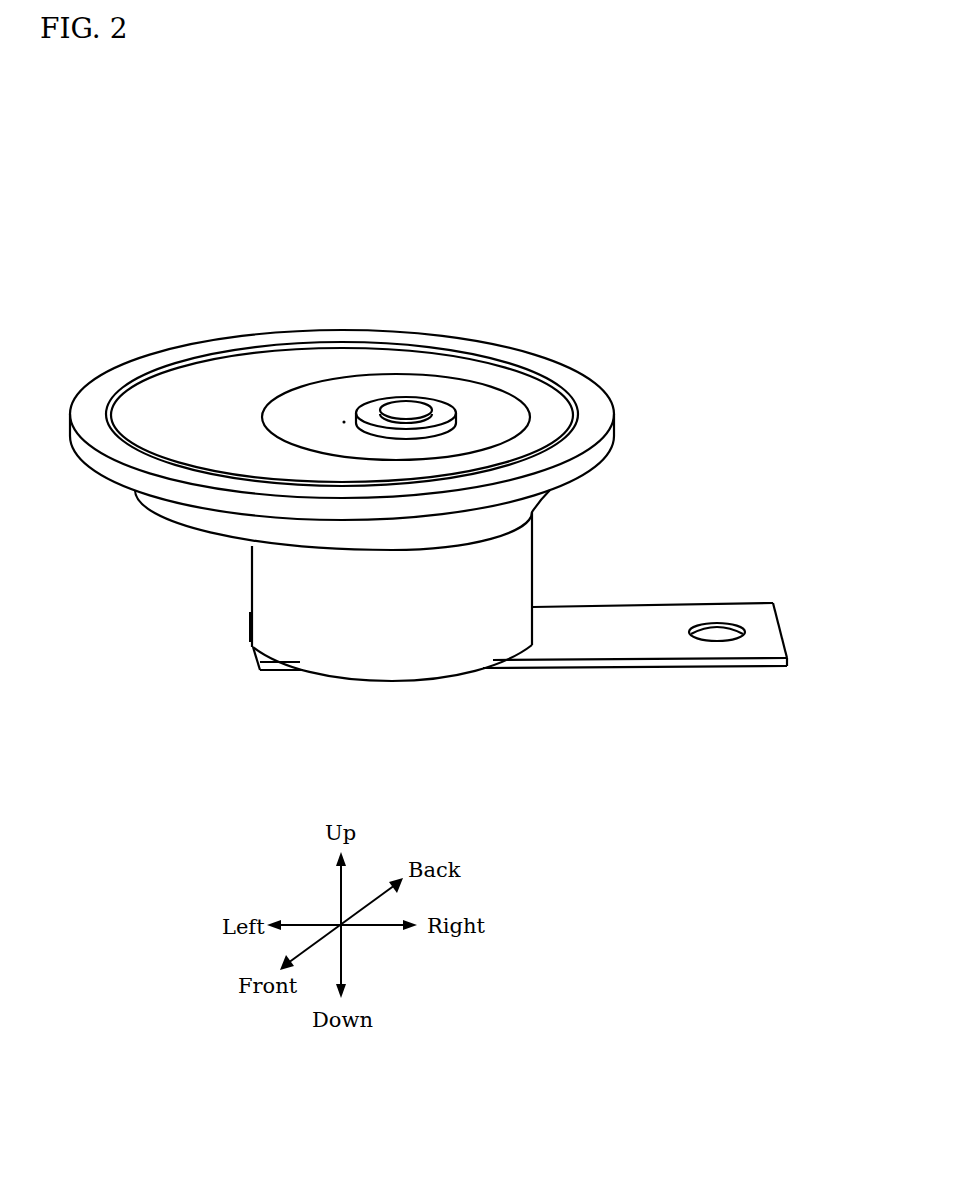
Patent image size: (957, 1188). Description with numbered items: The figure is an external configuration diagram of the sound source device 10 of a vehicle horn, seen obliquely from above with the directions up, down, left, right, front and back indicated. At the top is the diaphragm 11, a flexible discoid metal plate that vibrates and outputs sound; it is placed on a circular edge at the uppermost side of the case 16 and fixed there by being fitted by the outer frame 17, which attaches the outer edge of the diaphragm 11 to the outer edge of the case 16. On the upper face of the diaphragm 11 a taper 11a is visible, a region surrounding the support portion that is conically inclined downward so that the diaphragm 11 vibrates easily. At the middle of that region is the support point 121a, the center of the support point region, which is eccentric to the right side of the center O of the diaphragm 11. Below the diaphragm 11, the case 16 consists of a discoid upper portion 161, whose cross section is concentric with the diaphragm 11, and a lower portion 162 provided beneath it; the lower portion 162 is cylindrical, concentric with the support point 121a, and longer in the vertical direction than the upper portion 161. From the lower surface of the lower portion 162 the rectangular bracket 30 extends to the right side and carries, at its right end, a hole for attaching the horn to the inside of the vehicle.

The sound source device 10 is at (412, 154).
The diaphragm 11 is at (309, 361).
The taper 11a is at (497, 406).
The support point 121a is at (410, 408).
The case 16 is at (528, 556).
The upper portion 161 is at (180, 527).
The lower portion 162 is at (280, 622).
The outer frame 17 is at (154, 350).
The bracket 30 is at (657, 668).
The center of the diaphragm O is at (344, 422).